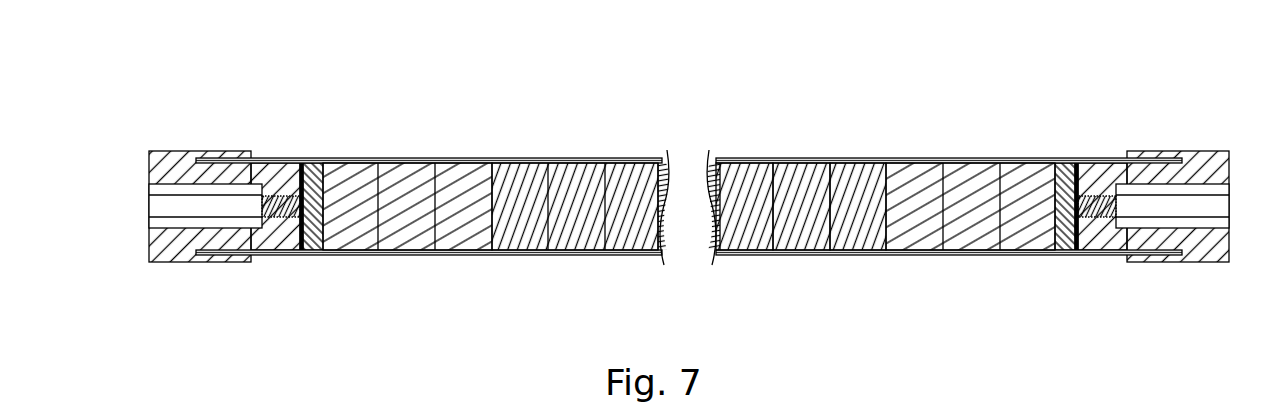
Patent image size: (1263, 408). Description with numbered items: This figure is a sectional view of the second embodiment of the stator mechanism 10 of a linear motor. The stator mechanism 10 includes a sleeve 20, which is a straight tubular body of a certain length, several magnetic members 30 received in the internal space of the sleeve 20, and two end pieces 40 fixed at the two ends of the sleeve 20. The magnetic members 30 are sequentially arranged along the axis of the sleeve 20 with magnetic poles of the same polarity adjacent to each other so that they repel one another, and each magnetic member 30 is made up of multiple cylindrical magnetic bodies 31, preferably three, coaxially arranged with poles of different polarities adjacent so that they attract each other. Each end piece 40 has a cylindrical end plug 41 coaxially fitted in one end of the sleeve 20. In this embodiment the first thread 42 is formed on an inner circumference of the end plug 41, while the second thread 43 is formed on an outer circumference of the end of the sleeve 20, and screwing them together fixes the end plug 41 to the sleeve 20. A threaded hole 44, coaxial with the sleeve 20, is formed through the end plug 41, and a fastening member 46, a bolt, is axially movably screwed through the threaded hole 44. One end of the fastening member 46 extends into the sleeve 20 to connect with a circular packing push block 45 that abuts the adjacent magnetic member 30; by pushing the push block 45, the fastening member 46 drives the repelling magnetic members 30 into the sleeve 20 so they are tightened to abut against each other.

The stator mechanism 10 is at (653, 191).
The sleeve 20 is at (545, 157).
The magnetic member 30 is at (801, 137).
The magnetic body 31 is at (745, 185).
The end piece 40 is at (369, 207).
The end plug 41 is at (151, 245).
The first thread 42 is at (218, 158).
The second thread 43 is at (233, 247).
The threaded hole 44 is at (277, 218).
The packing push block 45 is at (328, 158).
The fastening member 46 is at (277, 194).